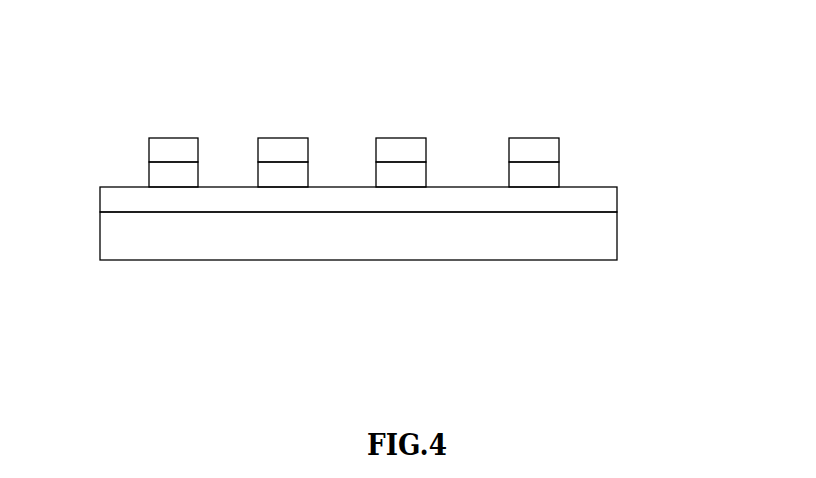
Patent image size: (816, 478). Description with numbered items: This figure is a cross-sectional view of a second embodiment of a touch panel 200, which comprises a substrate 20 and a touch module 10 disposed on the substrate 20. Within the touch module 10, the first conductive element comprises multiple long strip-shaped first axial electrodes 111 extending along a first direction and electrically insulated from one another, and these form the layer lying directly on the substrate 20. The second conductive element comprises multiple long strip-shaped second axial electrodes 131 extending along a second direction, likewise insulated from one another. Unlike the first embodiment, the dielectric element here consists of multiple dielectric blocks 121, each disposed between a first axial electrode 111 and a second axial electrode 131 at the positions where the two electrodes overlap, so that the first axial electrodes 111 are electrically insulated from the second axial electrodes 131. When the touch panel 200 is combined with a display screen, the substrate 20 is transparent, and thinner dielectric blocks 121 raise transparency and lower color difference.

The touch panel 200 is at (136, 77).
The touch module 10 is at (697, 97).
The second axial electrode 131 is at (559, 143).
The dielectric block 121 is at (559, 172).
The first axial electrode 111 is at (612, 199).
The substrate 20 is at (618, 244).